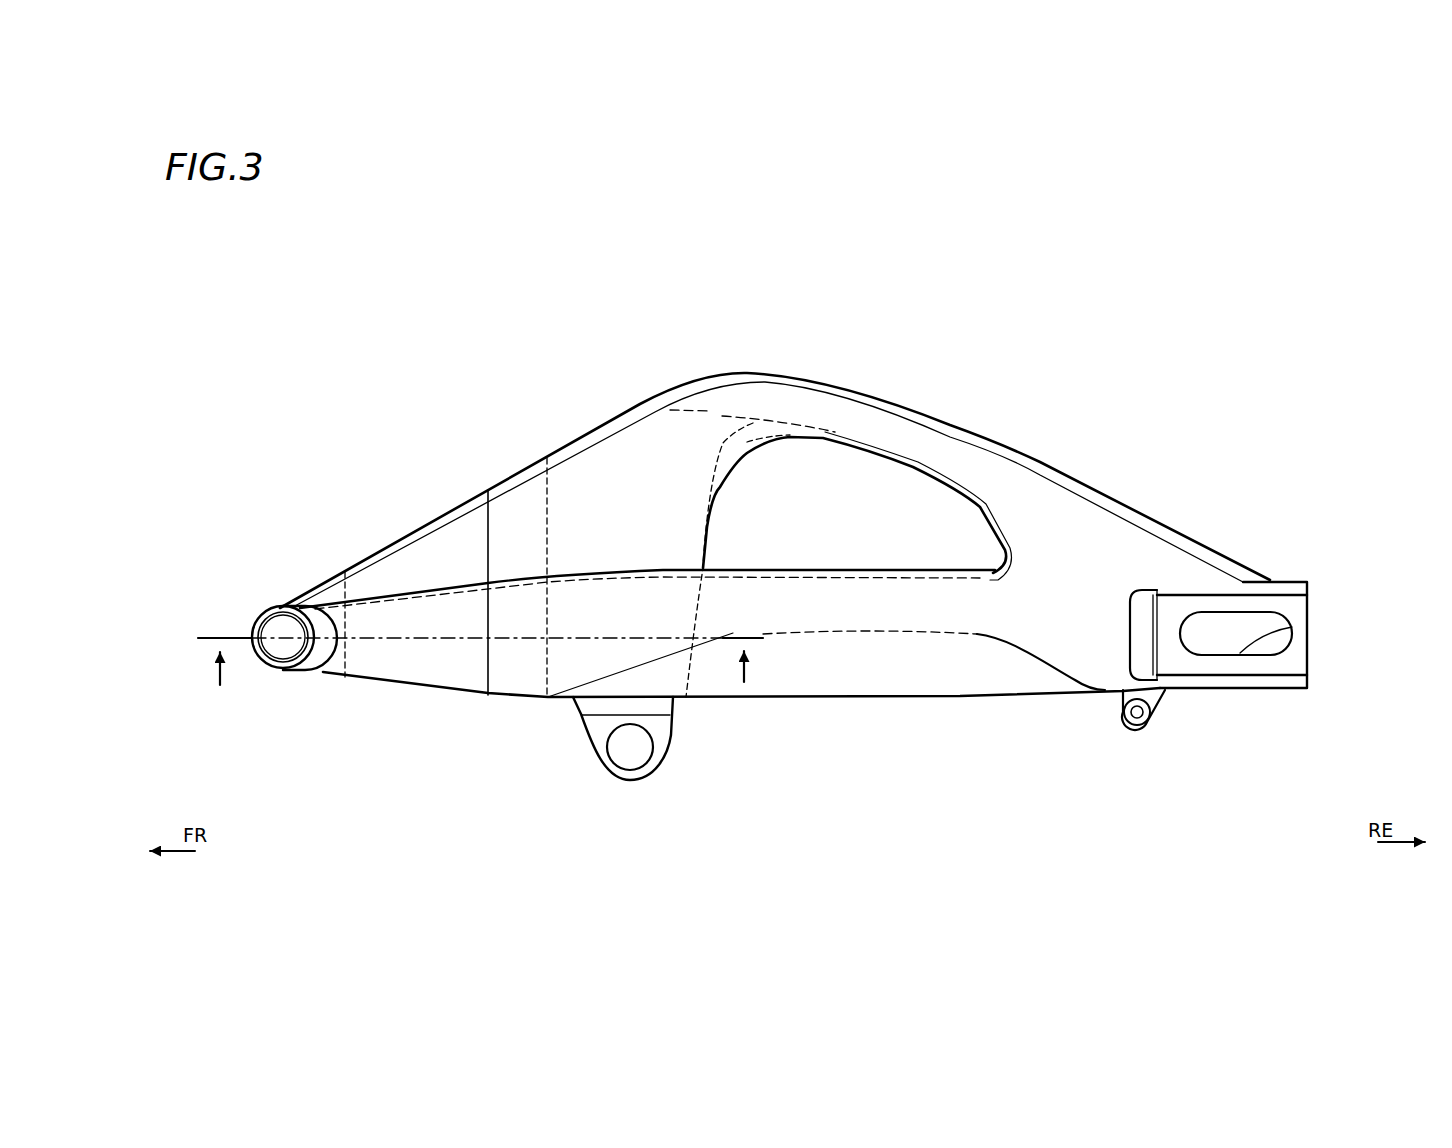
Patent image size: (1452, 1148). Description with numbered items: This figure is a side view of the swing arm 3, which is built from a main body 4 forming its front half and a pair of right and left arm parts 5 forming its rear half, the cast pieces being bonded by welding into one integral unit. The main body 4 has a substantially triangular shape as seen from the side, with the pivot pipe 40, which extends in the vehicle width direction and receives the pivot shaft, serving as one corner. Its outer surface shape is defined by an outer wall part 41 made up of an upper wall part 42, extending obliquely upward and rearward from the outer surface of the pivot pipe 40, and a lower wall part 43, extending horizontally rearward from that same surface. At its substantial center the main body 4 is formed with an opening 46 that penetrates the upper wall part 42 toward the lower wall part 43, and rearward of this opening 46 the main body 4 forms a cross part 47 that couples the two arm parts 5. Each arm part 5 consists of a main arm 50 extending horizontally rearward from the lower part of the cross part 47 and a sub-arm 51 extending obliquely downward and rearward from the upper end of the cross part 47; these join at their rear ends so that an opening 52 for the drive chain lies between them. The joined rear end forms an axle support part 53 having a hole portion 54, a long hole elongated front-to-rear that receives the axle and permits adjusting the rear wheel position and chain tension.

The swing arm 3 is at (248, 219).
The main body 4 is at (330, 411).
The arm part 5 is at (1262, 415).
The pivot pipe 40 is at (263, 667).
The outer wall part 41 is at (427, 520).
The upper wall part 42 is at (768, 494).
The lower wall part 43 is at (430, 690).
The opening 46 is at (543, 487).
The cross part 47 is at (590, 428).
The main arm 50 is at (866, 676).
The sub-arm 51 is at (890, 432).
The opening 52 is at (866, 513).
The axle support part 53 is at (1276, 713).
The hole portion 54 is at (1292, 627).